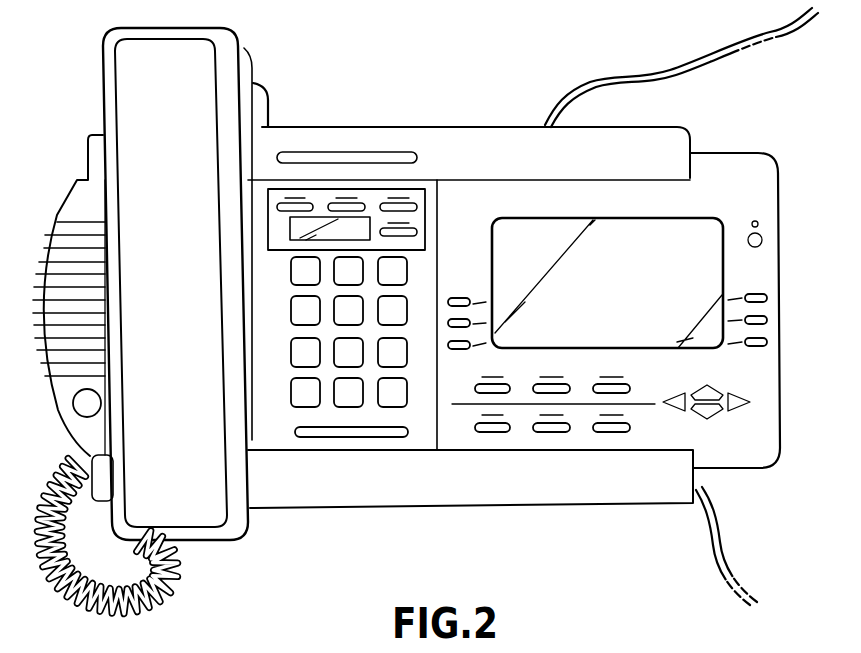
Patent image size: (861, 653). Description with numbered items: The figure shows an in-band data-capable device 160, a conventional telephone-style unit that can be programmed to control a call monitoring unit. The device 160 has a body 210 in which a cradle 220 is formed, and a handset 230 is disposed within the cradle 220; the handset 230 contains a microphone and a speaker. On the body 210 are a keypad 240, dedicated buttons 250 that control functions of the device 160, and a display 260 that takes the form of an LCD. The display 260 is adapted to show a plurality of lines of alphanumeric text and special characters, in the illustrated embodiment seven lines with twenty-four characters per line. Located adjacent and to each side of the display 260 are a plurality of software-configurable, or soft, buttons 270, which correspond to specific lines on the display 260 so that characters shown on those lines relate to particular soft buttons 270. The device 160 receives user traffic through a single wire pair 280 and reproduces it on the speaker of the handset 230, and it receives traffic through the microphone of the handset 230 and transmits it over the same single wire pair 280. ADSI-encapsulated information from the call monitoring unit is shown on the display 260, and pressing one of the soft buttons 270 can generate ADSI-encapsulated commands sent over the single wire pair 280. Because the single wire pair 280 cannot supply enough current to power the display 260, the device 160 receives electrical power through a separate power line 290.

The in-band data-capable device 160 is at (391, 74).
The body 210 is at (774, 156).
The cradle 220 is at (266, 117).
The handset 230 is at (236, 34).
The keypad 240 is at (408, 270).
The dedicated buttons 250 is at (498, 428).
The display 260 is at (693, 225).
The soft buttons 270 is at (465, 300).
The single wire pair 280 is at (667, 68).
The power line 290 is at (724, 522).